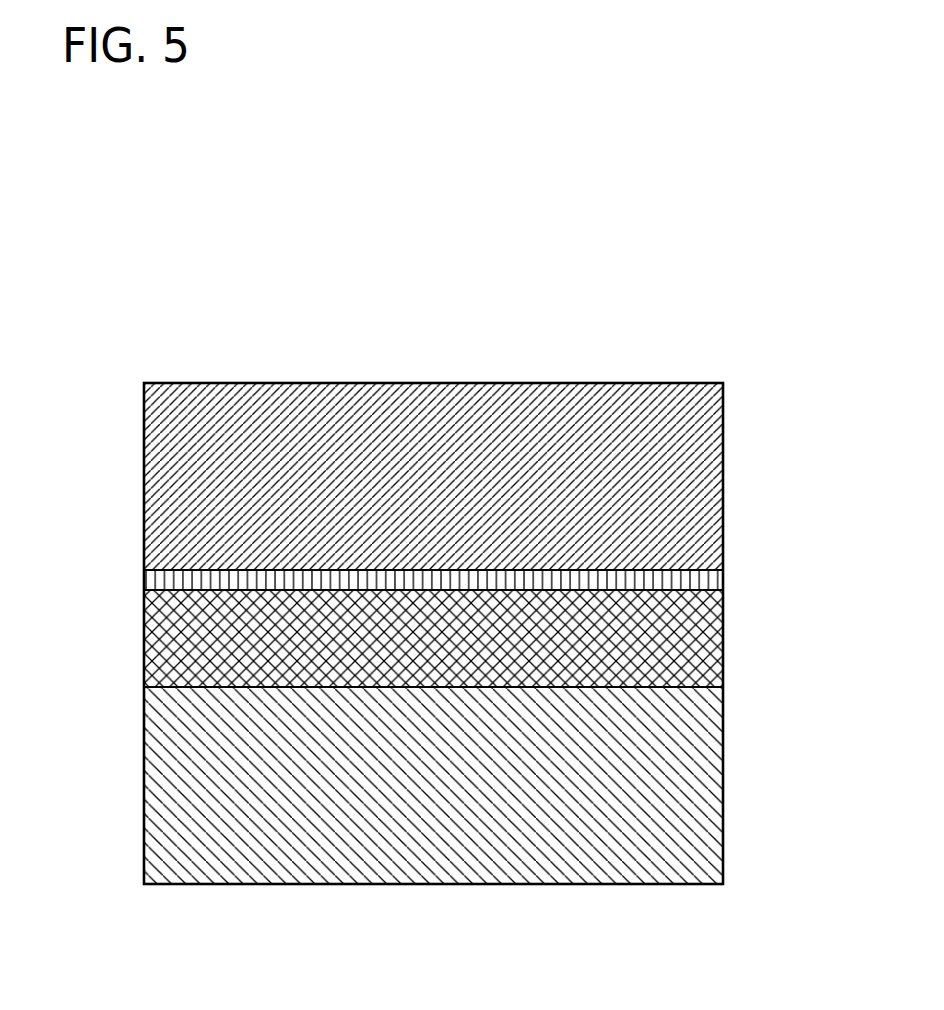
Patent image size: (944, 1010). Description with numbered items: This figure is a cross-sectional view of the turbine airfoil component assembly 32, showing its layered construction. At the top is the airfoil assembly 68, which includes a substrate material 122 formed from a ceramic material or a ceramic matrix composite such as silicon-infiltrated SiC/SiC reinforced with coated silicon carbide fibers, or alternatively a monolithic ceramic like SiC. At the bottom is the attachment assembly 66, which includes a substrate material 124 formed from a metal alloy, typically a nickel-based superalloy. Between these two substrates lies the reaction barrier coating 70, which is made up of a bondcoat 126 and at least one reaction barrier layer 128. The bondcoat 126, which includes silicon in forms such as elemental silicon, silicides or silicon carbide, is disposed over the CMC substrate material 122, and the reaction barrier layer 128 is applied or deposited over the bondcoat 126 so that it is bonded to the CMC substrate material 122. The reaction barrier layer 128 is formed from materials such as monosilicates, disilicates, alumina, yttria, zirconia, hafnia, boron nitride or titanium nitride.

The turbine airfoil component assembly 32 is at (468, 538).
The airfoil assembly 68 is at (456, 493).
The attachment assembly 66 is at (495, 811).
The reaction barrier coating 70 is at (456, 625).
The substrate material 122 is at (724, 452).
The substrate material 124 is at (724, 768).
The bondcoat 126 is at (724, 580).
The reaction barrier layer 128 is at (724, 633).